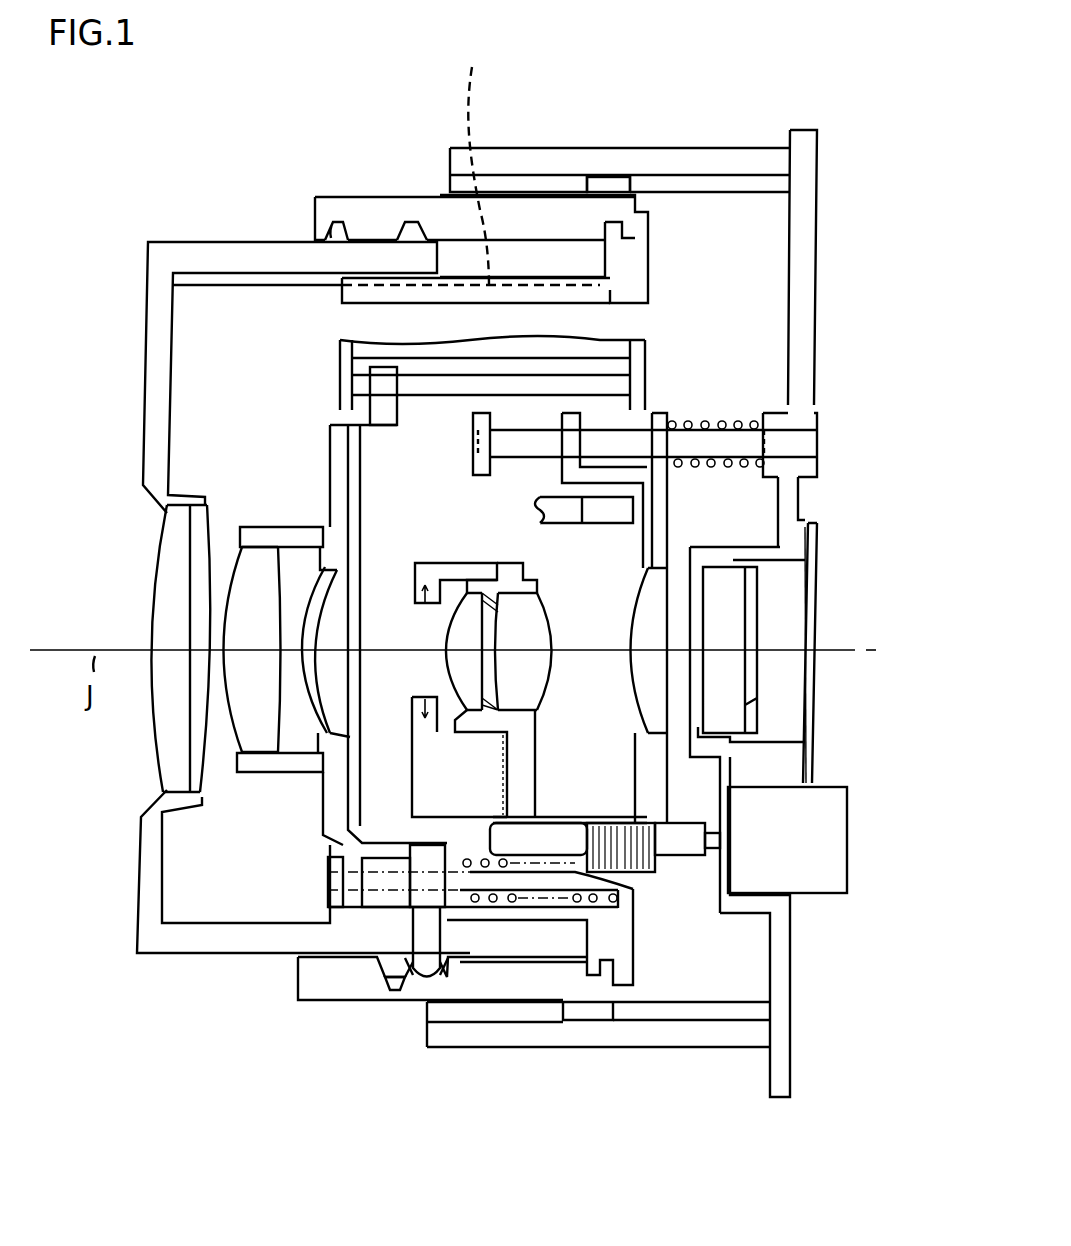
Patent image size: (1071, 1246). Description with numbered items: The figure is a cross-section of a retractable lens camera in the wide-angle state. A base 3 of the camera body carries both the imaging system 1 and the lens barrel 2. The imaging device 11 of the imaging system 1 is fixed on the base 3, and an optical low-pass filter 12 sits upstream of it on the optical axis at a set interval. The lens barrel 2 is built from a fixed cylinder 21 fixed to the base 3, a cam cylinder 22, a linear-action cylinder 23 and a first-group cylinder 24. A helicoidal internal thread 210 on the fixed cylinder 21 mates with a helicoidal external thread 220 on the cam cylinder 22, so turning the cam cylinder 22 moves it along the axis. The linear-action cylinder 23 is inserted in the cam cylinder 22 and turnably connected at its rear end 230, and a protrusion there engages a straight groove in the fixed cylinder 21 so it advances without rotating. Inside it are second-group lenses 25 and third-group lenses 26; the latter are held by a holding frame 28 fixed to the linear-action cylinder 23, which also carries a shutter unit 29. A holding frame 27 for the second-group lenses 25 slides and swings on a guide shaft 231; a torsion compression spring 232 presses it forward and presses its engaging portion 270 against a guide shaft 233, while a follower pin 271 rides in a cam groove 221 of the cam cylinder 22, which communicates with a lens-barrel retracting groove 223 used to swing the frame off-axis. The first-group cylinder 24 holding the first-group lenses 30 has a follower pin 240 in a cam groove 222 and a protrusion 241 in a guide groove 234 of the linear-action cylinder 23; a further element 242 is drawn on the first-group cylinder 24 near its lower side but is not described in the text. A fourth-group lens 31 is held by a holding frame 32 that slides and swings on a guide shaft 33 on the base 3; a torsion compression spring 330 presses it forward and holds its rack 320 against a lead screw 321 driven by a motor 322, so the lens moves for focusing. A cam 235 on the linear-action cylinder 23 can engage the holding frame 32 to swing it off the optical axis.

The imaging system 1 is at (831, 579).
The lens barrel 2 is at (360, 168).
The base 3 is at (802, 278).
The imaging device 11 is at (790, 662).
The optical low-pass filter 12 is at (733, 603).
The fixed cylinder 21 is at (718, 152).
The cam cylinder 22 is at (393, 205).
The linear-action cylinder 23 is at (612, 298).
The first-group cylinder 24 is at (212, 248).
The second-group lenses 25 is at (318, 592).
The third-group lenses 26 is at (518, 612).
The holding frame 27 is at (263, 767).
The holding frame 28 is at (528, 762).
The shutter unit 29 is at (430, 788).
The first-group lenses 30 is at (202, 583).
The fourth-group lens 31 is at (642, 687).
The holding frame 32 is at (655, 523).
The guide shaft 33 is at (800, 442).
The helicoidal internal thread 210 is at (525, 165).
The helicoidal external thread 220 is at (605, 183).
The cam groove 221 is at (410, 980).
The cam groove 222 is at (334, 230).
The lens-barrel retracting groove 223 is at (532, 958).
The rear end 230 is at (648, 252).
The guide shaft 231 is at (398, 935).
The torsion compression spring 232 is at (575, 898).
The guide shaft 233 is at (610, 386).
The guide groove 234 is at (480, 162).
The cam 235 is at (565, 517).
The follower pin 240 is at (418, 228).
The protrusion 241 is at (200, 283).
The bottom plate 242 is at (380, 925).
The engaging portion 270 is at (380, 378).
The follower pin 271 is at (435, 935).
The rack 320 is at (633, 870).
The lead screw 321 is at (685, 848).
The motor 322 is at (822, 815).
The torsion compression spring 330 is at (742, 418).